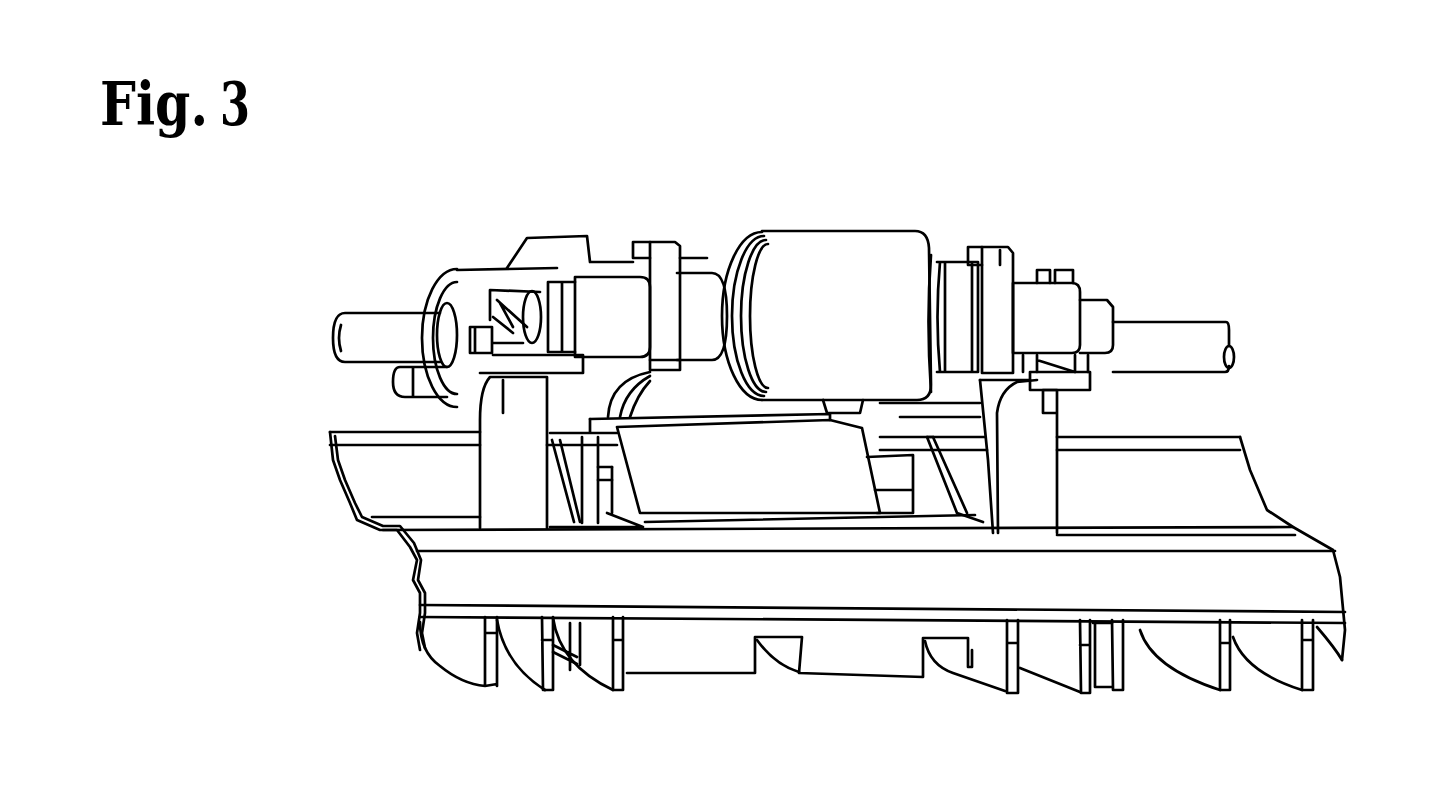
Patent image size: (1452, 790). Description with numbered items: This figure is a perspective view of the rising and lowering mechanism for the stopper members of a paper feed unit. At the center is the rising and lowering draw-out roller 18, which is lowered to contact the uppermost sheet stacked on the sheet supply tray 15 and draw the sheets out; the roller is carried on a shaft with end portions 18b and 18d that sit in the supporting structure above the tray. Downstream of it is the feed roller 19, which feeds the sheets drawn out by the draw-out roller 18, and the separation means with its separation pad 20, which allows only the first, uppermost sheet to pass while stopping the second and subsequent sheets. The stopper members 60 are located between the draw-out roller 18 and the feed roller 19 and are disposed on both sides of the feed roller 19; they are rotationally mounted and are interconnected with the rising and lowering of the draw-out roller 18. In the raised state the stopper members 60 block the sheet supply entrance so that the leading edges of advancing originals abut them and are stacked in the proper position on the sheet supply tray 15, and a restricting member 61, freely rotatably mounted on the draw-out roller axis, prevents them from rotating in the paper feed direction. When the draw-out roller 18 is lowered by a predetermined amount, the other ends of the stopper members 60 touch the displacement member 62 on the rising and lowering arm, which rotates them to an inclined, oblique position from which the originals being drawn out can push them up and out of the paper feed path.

The sheet supply tray 15 is at (1317, 592).
The draw-out roller 18 is at (827, 253).
The roller gear 18b is at (513, 297).
The roller shaft holder 18d is at (663, 240).
The feed roller 19 is at (682, 400).
The separation pad 20 is at (603, 450).
The stopper member 60 is at (508, 513).
The restricting member 61 is at (560, 305).
The displacement member 62 is at (507, 307).